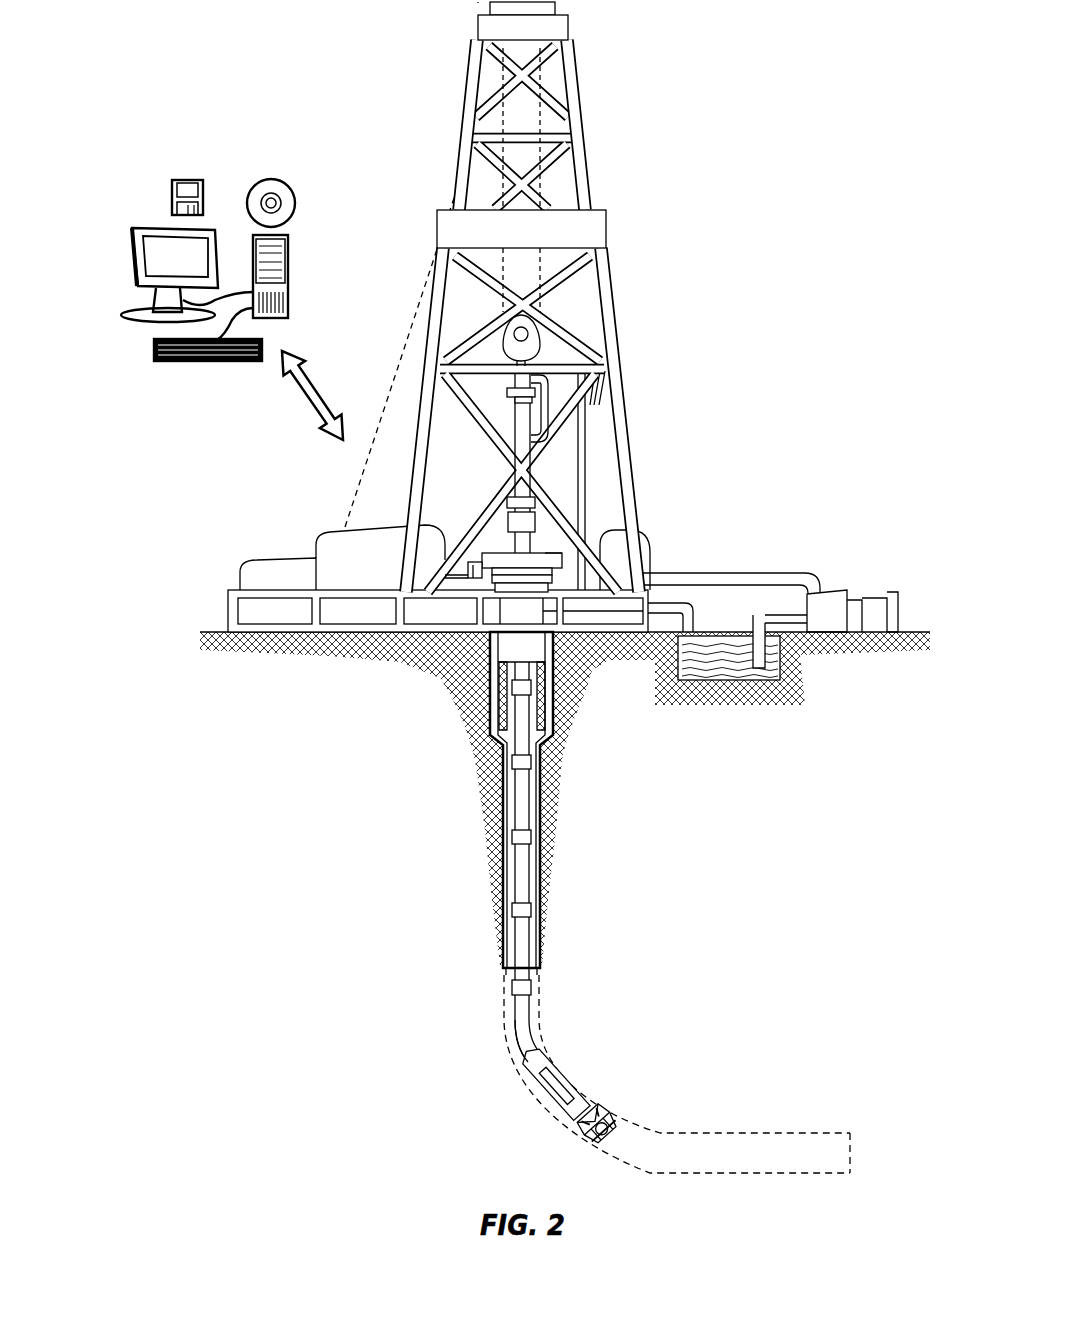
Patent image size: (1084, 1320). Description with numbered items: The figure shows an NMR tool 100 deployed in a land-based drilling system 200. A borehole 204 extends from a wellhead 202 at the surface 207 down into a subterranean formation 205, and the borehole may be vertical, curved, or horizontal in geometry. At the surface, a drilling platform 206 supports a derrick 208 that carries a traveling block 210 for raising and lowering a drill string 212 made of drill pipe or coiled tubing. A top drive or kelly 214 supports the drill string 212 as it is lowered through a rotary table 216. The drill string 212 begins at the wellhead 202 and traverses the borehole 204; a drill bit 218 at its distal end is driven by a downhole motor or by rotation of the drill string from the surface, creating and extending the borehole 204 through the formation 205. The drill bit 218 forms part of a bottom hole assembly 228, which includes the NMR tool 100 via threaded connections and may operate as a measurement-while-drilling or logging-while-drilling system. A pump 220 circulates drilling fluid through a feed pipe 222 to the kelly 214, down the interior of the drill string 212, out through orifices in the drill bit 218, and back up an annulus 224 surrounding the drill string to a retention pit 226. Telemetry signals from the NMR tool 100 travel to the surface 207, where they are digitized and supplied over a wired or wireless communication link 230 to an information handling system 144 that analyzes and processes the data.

The drilling system 200 is at (832, 106).
The information handling system 144 is at (137, 168).
The communication link 230 is at (303, 400).
The derrick 208 is at (580, 150).
The traveling block 210 is at (545, 338).
The kelly 214 is at (523, 418).
The rotary table 216 is at (556, 542).
The wellhead 202 is at (563, 578).
The drilling platform 206 is at (230, 614).
The feed pipe 222 is at (760, 575).
The pump 220 is at (840, 592).
The surface 207 is at (910, 632).
The retention pit 226 is at (722, 670).
The annulus 224 is at (505, 832).
The drill string 212 is at (530, 812).
The borehole 204 is at (540, 873).
The subterranean formation 205 is at (762, 919).
The NMR tool 100 is at (565, 1090).
The drill bit 218 is at (618, 1120).
The bottom hole assembly 228 is at (530, 1086).